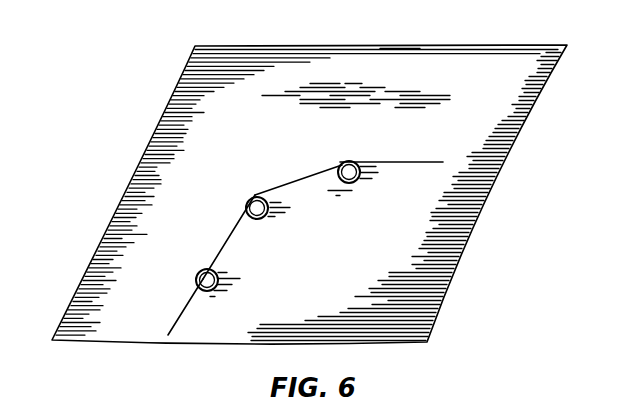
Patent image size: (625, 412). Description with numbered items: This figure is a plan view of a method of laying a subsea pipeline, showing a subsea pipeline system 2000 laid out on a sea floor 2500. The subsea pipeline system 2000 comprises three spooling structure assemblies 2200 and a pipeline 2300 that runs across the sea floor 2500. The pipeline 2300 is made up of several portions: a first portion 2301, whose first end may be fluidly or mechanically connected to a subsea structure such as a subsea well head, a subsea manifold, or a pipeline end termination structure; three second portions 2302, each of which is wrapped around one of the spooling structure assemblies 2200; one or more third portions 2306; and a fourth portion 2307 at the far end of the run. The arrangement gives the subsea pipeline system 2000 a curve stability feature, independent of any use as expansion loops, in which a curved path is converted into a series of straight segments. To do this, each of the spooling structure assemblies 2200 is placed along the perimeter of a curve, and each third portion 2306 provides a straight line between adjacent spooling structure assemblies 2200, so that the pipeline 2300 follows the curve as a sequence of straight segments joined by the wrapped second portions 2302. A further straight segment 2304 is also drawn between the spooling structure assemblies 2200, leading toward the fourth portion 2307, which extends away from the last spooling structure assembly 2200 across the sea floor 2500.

The subsea pipeline system 2000 is at (150, 60).
The spooling structure assembly 2200 is at (256, 194).
The pipeline 2300 is at (278, 224).
The first portion 2301 is at (186, 306).
The second portion 2302 is at (268, 212).
The third trace segment 2304 is at (313, 176).
The third portion 2306 is at (226, 240).
The fourth portion 2307 is at (411, 161).
The sea floor 2500 is at (467, 243).